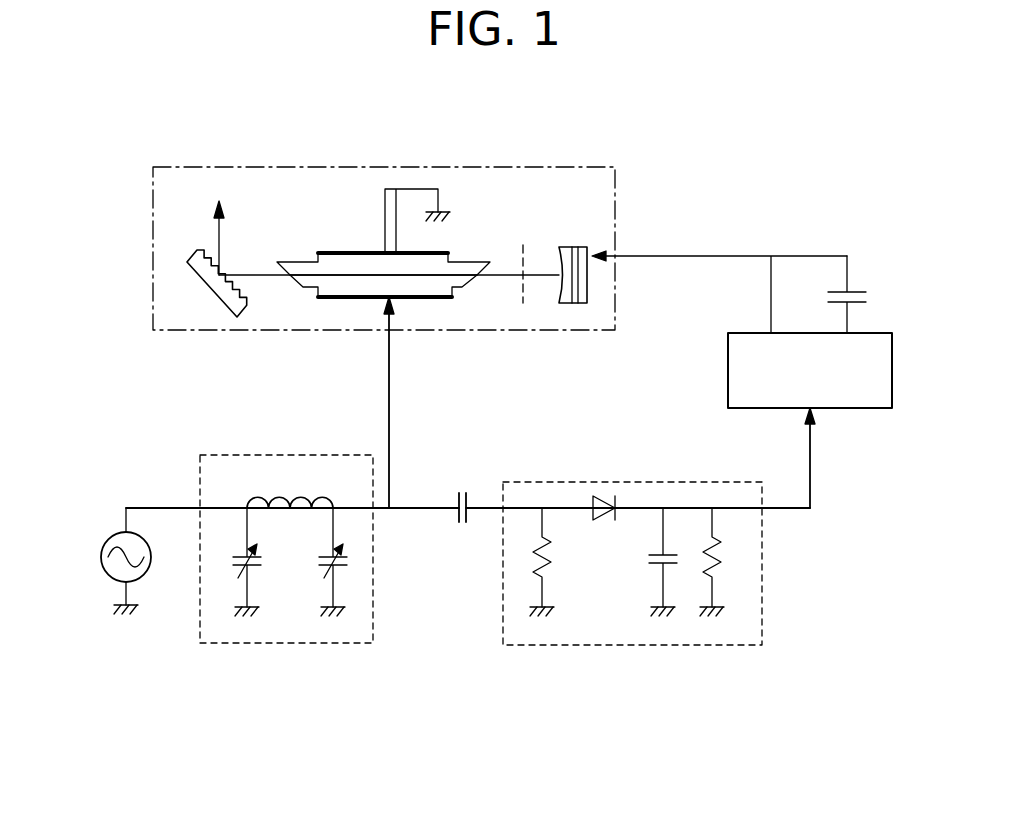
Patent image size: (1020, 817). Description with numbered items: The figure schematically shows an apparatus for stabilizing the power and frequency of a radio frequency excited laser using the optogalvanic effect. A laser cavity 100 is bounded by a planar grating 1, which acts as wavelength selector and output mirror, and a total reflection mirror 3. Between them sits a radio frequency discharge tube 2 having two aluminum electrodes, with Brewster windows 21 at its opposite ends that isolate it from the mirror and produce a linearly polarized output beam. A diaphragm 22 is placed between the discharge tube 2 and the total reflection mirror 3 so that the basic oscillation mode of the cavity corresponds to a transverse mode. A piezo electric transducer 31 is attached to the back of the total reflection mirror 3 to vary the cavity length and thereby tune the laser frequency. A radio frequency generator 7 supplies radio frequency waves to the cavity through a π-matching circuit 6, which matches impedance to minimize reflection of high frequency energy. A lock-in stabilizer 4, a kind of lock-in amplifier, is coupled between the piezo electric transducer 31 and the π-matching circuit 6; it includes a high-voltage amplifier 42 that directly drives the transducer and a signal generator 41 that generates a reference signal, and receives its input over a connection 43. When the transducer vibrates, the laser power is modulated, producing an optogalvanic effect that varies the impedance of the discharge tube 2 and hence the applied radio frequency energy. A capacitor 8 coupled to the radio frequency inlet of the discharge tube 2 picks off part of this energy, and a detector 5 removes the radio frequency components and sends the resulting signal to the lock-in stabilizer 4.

The laser cavity 100 is at (312, 183).
The planar grating 1 is at (212, 288).
The radio frequency discharge tube 2 is at (398, 263).
The Brewster windows 21 is at (290, 275).
The diaphragm 22 is at (523, 273).
The total reflection mirror 3 is at (575, 247).
The piezo electric transducer 31 is at (586, 247).
The lock-in stabilizer 4 is at (852, 409).
The signal generator 41 is at (851, 300).
The high-voltage amplifier 42 is at (771, 292).
The signal input line 43 is at (810, 472).
The detector 5 is at (622, 633).
The π-matching circuit 6 is at (317, 633).
The radio frequency generator 7 is at (115, 572).
The capacitor 8 is at (464, 522).